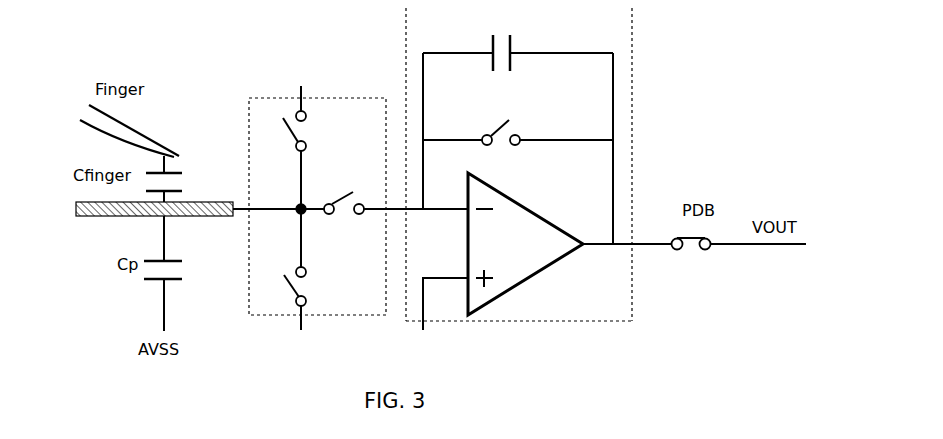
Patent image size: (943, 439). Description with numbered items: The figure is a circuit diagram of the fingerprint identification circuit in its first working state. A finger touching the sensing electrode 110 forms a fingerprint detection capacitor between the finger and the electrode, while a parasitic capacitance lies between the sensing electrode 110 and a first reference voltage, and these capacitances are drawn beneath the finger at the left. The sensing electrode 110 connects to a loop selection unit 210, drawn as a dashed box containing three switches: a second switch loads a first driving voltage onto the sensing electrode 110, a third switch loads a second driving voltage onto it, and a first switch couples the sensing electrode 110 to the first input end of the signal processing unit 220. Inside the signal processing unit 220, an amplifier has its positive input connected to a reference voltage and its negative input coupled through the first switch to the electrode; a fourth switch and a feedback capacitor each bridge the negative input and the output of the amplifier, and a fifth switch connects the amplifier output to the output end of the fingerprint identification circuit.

The sensing electrode 110 is at (113, 217).
The loop selection unit 210 is at (259, 94).
The signal processing unit 220 is at (631, 38).